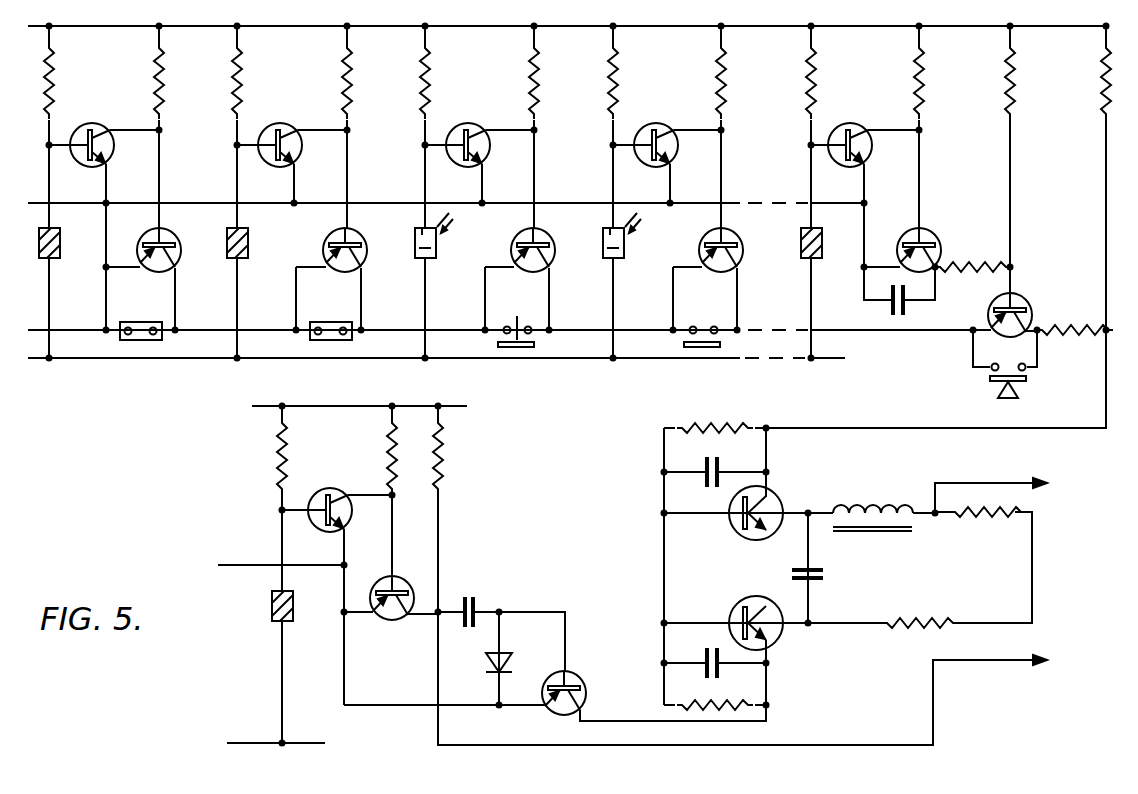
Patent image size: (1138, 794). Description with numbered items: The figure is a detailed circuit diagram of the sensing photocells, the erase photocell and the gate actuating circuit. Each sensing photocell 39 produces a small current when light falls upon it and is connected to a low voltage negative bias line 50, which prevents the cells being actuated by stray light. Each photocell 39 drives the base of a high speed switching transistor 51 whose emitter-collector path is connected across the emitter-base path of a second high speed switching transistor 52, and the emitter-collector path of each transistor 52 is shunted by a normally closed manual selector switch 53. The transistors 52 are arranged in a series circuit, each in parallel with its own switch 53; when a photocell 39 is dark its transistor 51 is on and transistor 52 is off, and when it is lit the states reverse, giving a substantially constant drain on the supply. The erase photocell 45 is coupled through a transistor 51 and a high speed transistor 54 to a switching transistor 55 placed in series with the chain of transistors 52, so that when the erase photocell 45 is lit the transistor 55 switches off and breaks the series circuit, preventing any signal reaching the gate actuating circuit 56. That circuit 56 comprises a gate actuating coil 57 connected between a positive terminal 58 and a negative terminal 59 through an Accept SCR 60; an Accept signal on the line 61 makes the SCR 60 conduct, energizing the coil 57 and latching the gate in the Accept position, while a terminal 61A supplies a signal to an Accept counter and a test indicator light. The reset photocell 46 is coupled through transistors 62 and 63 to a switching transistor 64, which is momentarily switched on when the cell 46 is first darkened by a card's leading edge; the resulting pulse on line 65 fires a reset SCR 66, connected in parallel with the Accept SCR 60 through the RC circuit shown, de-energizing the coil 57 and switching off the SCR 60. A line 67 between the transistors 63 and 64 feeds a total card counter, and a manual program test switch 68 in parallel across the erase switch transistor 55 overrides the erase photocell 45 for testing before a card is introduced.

The photocell 39 is at (59, 240).
The erase photocell 45 is at (822, 240).
The reset photocell 46 is at (294, 608).
The low voltage negative bias line 50 is at (30, 359).
The high speed switching transistor 51 is at (87, 124).
The second high speed switching transistor 52 is at (166, 237).
The manual selector switch 53 is at (140, 322).
The high speed transistor 54 is at (930, 238).
The switching transistor 55 is at (1031, 310).
The gate actuating circuit 56 is at (880, 496).
The gate actuating coil 57 is at (836, 513).
The positive terminal 58 is at (1032, 567).
The negative terminal 59 is at (664, 561).
The Accept SCR 60 is at (782, 494).
The line 61 is at (1106, 407).
The terminal 61A is at (962, 485).
The transistor 62 is at (318, 492).
The transistor 63 is at (396, 580).
The switching transistor 64 is at (578, 672).
The line 65 is at (770, 712).
The reset SCR 66 is at (783, 645).
The line 67 is at (933, 700).
The manual program test switch 68 is at (990, 371).